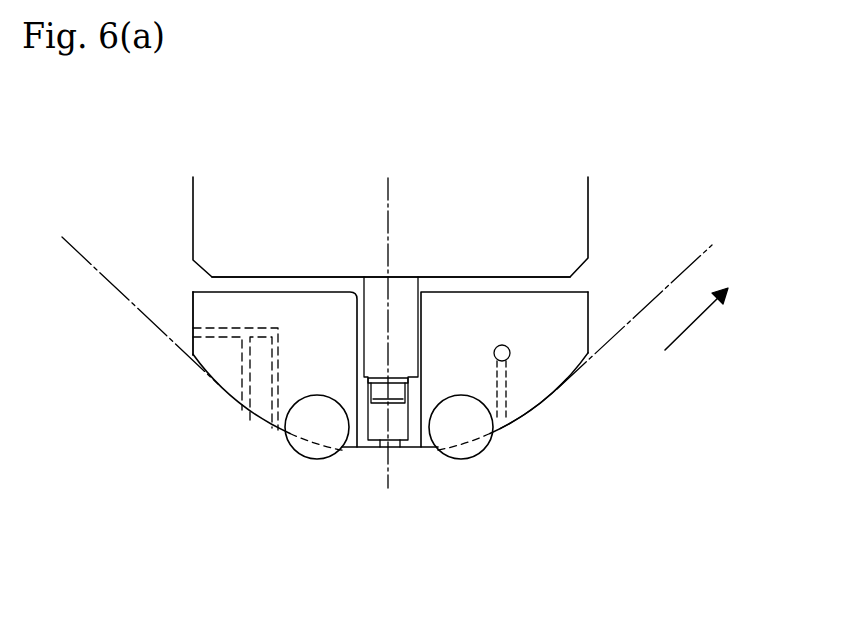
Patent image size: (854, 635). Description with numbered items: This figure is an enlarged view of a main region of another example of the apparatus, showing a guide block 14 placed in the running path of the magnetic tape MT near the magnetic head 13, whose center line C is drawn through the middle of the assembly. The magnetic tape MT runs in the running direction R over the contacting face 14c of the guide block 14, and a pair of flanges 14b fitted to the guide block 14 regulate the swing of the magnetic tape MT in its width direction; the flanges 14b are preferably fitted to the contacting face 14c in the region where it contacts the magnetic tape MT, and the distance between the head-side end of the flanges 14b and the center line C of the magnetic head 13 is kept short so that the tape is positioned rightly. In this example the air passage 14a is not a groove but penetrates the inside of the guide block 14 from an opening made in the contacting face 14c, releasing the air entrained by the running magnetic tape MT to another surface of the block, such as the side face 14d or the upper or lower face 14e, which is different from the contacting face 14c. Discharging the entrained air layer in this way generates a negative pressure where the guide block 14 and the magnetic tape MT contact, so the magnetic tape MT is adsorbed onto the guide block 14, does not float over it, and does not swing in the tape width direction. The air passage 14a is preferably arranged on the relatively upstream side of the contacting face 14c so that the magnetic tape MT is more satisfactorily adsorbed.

The magnetic head 13 is at (396, 449).
The guide block 14 is at (192, 290).
The air passage 14a is at (507, 400).
The flange 14b is at (322, 460).
The contacting face 14c is at (216, 390).
The side face 14d is at (193, 310).
The upper or lower face 14e is at (548, 375).
The center line C is at (390, 203).
The magnetic tape MT is at (100, 277).
The running direction R is at (685, 332).